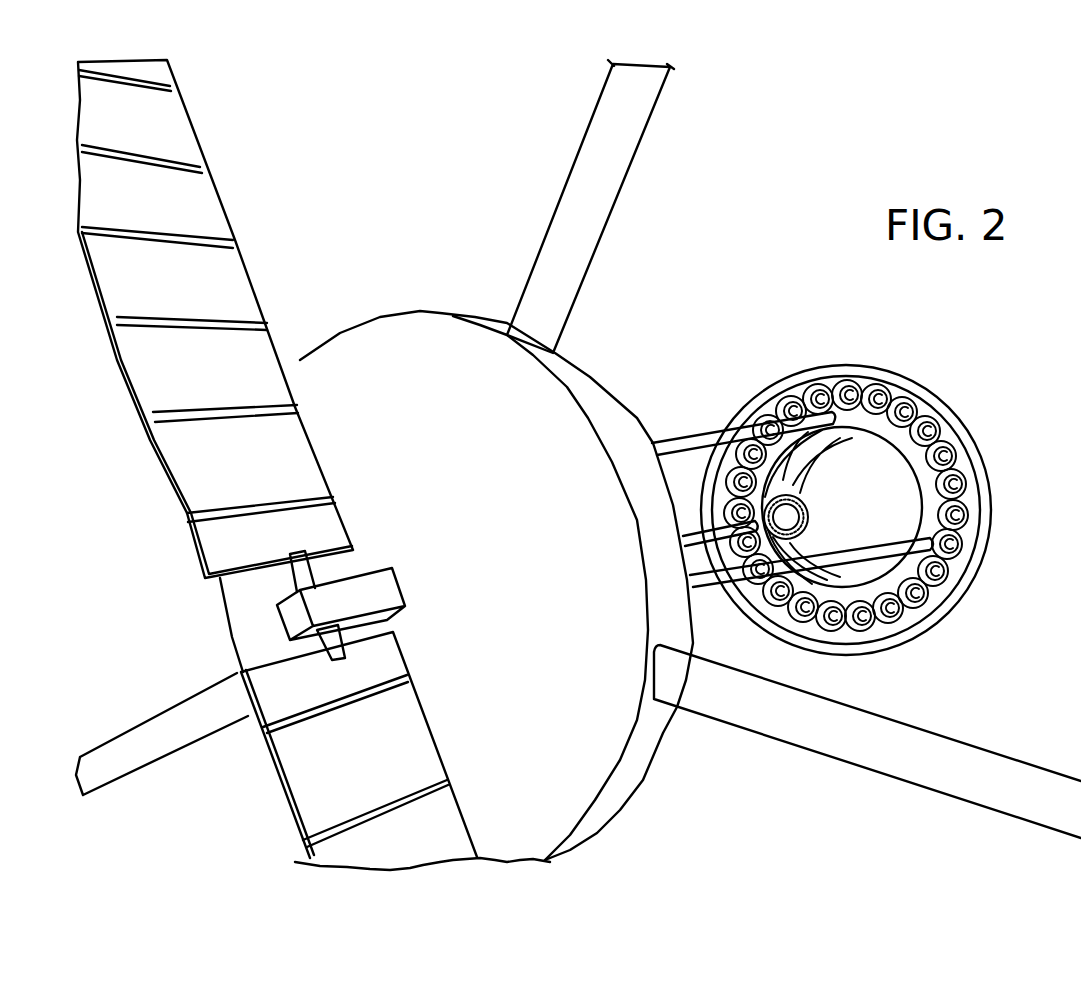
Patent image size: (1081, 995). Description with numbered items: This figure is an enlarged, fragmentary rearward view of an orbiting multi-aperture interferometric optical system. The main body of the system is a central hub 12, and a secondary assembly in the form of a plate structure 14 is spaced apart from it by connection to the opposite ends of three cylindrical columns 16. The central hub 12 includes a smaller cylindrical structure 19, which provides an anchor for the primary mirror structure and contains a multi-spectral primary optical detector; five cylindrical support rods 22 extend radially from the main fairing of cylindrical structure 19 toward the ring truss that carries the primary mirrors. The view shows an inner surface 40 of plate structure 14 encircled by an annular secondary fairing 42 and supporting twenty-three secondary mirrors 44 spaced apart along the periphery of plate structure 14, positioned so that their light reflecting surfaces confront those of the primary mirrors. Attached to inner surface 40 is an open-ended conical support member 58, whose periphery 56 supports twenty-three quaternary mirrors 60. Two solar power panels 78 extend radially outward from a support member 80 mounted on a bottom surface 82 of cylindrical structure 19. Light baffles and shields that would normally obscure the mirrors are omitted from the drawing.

The central hub 12 is at (476, 580).
The plate structure 14 is at (886, 474).
The cylindrical columns 16 is at (687, 438).
The cylindrical structure 19 is at (577, 366).
The cylindrical support rods 22 is at (613, 157).
The inner surface 40 is at (920, 413).
The annular secondary fairing 42 is at (973, 455).
The secondary mirrors 44 is at (848, 385).
The periphery 56 is at (805, 487).
The open-ended conical support member 58 is at (903, 522).
The quaternary mirrors 60 is at (805, 507).
The solar power panels 78 is at (200, 203).
The support member 80 is at (372, 588).
The bottom surface 82 is at (545, 588).